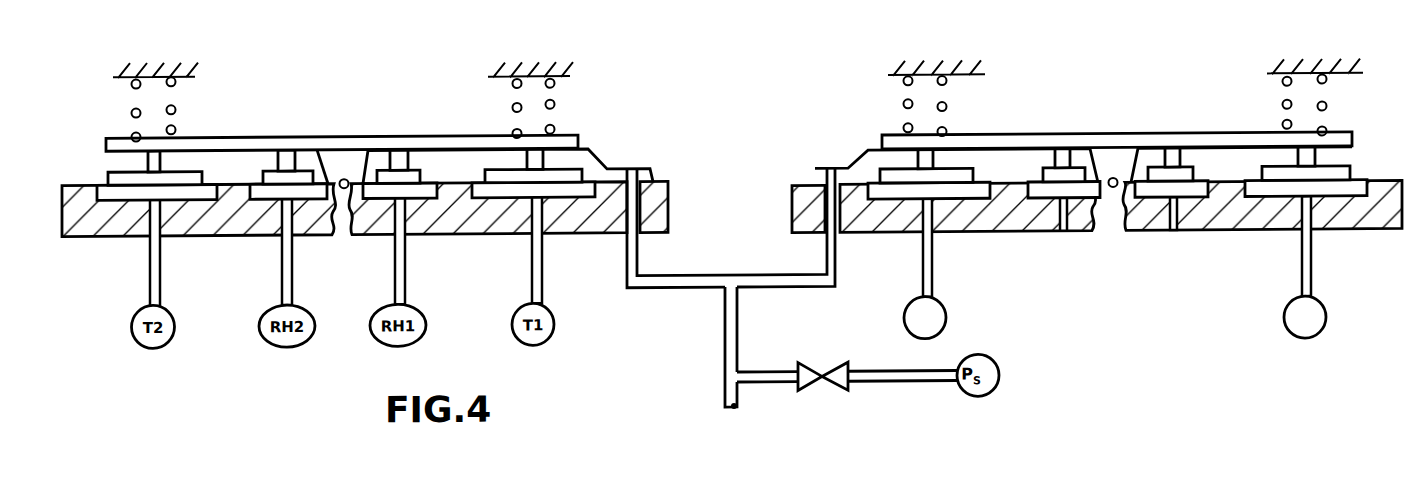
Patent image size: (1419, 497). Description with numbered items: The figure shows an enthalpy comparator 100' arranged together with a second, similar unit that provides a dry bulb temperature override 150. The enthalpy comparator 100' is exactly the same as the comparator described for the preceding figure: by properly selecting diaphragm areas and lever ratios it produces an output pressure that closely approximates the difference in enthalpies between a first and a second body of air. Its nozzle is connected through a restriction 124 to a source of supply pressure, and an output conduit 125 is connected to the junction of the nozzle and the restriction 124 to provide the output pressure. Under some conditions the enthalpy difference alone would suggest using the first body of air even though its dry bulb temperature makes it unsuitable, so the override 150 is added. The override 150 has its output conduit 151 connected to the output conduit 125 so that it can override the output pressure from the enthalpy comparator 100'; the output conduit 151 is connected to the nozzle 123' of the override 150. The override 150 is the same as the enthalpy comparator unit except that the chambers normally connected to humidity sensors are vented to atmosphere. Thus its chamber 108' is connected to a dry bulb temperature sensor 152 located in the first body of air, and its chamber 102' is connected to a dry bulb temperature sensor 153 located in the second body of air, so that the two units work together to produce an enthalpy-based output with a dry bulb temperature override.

The enthalpy comparator 100' is at (397, 103).
The nozzle 123' is at (798, 169).
The output conduit 151 is at (777, 296).
The output conduit 125 is at (722, 388).
The restriction 124 is at (818, 392).
The chamber 108' is at (936, 227).
The chamber 102' is at (1313, 227).
The dry bulb temperature sensor 152 is at (946, 323).
The dry bulb temperature sensor 153 is at (1326, 321).
The dry bulb temperature override 150 is at (1377, 108).